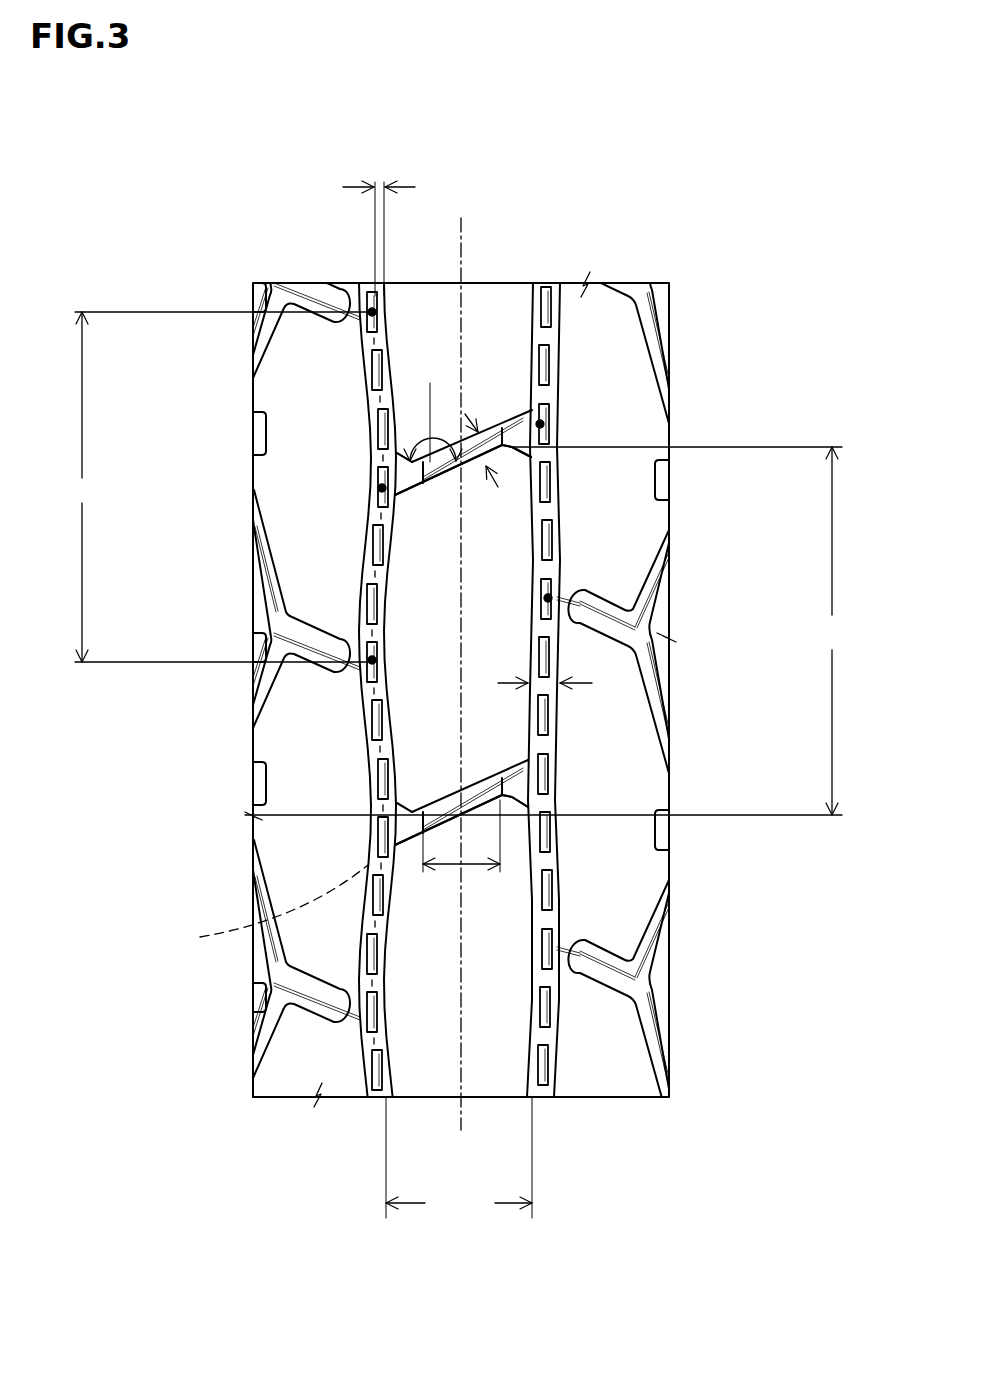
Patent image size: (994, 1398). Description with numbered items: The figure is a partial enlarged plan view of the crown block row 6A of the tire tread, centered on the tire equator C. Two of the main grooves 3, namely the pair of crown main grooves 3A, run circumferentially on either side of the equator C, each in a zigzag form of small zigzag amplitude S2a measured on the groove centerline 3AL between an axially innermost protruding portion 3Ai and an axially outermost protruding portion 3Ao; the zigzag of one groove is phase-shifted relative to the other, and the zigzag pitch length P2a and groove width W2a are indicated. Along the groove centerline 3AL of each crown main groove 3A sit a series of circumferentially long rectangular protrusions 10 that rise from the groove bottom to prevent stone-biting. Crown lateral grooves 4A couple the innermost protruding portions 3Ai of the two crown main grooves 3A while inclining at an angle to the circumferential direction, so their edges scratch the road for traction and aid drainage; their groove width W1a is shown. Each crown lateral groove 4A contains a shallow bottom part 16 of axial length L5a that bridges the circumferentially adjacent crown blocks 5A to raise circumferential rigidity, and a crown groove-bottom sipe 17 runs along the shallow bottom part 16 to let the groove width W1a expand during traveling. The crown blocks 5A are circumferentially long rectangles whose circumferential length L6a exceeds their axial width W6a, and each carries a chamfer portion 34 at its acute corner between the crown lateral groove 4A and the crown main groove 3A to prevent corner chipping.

The main groove 3 is at (555, 290).
The crown main groove 3A is at (367, 1085).
The axially outermost protruding portion 3Ao is at (372, 312).
The axially innermost protruding portion 3Ai is at (382, 488).
The groove centerline 3AL is at (255, 907).
The crown lateral groove 4A is at (410, 486).
The crown block 5A is at (447, 672).
The crown block row 6A is at (493, 1071).
The protrusion 10 is at (373, 955).
The shallow bottom part 16 is at (473, 463).
The crown groove-bottom sipe 17 is at (455, 808).
The chamfer portion 34 is at (398, 812).
The tire equator C is at (460, 661).
The zigzag amplitude S2a is at (379, 226).
The groove width of crown lateral groove W1a is at (470, 418).
The groove width of crown main groove W2a is at (555, 681).
The zigzag pitch length P2a is at (214, 487).
The circumferential length of crown block L6a is at (548, 631).
The axial length of shallow bottom part L5a is at (557, 916).
The axial width of crown block W6a is at (459, 1157).